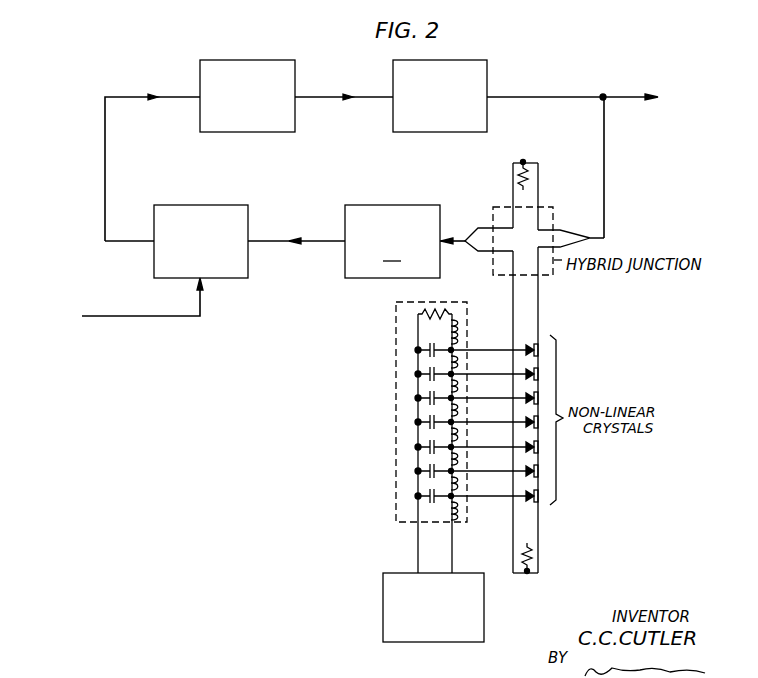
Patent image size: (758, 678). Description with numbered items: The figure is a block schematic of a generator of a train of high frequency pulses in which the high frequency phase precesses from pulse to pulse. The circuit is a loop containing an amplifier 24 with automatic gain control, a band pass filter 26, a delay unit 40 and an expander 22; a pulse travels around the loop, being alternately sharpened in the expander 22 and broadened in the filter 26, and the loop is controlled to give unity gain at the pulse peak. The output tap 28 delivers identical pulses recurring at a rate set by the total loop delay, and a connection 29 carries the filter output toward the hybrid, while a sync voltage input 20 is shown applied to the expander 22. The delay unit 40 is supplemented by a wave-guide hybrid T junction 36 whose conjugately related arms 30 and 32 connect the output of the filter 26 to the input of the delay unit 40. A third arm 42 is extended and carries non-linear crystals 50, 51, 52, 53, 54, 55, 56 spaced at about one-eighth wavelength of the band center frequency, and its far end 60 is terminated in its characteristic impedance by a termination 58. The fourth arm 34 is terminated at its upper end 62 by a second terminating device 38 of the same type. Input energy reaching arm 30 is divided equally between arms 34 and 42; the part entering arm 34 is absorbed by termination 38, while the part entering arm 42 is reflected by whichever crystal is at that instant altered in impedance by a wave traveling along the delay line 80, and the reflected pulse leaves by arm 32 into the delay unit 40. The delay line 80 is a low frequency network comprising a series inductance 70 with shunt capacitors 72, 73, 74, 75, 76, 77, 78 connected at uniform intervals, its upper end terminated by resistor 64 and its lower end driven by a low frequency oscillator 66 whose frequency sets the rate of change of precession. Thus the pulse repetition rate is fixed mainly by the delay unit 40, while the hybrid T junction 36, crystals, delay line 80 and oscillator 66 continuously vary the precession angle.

The sync voltage input 20 is at (88, 314).
The expander 22 is at (178, 210).
The amplifier 24 is at (253, 133).
The band pass filter 26 is at (432, 133).
The output tap 28 is at (628, 96).
The connection line 29 is at (606, 158).
The arm 30 is at (560, 229).
The arm 32 is at (482, 256).
The fourth arm 34 is at (540, 194).
The hybrid T junction 36 is at (546, 276).
The terminating device 38 is at (532, 175).
The delay unit 40 is at (364, 207).
The third arm 42 is at (540, 324).
The non-linear crystal 50 is at (526, 352).
The non-linear crystal 51 is at (526, 376).
The non-linear crystal 52 is at (526, 400).
The non-linear crystal 53 is at (526, 424).
The non-linear crystal 54 is at (526, 449).
The non-linear crystal 55 is at (526, 473).
The non-linear crystal 56 is at (526, 498).
The termination 58 is at (537, 553).
The far end 60 is at (530, 575).
The upper end 62 is at (527, 160).
The resistor 64 is at (447, 306).
The low frequency oscillator 66 is at (383, 612).
The series inductance 70 is at (457, 338).
The shunt connected capacitor 72 is at (416, 350).
The shunt connected capacitor 73 is at (416, 374).
The shunt connected capacitor 74 is at (416, 398).
The shunt connected capacitor 75 is at (416, 422).
The shunt connected capacitor 76 is at (416, 447).
The shunt connected capacitor 77 is at (416, 471).
The shunt connected capacitor 78 is at (416, 496).
The delay line 80 is at (396, 522).